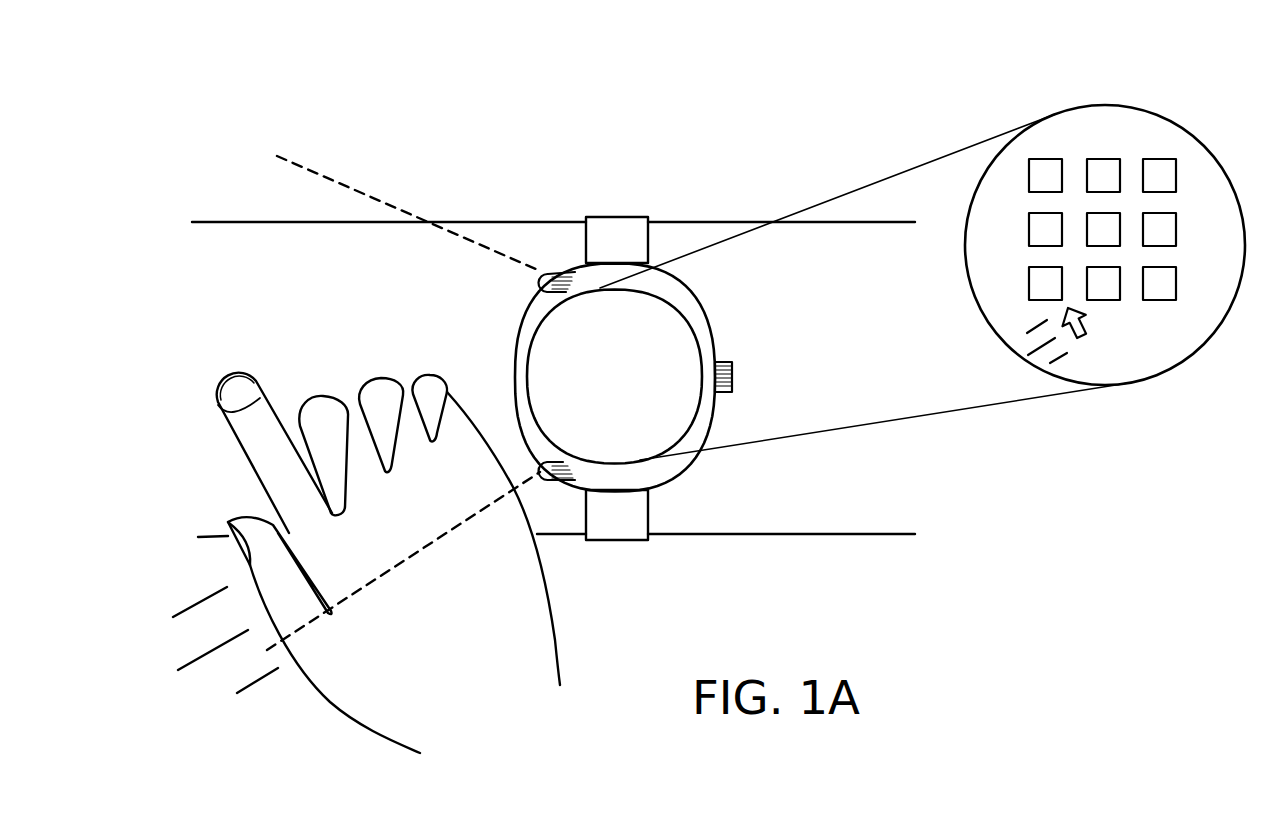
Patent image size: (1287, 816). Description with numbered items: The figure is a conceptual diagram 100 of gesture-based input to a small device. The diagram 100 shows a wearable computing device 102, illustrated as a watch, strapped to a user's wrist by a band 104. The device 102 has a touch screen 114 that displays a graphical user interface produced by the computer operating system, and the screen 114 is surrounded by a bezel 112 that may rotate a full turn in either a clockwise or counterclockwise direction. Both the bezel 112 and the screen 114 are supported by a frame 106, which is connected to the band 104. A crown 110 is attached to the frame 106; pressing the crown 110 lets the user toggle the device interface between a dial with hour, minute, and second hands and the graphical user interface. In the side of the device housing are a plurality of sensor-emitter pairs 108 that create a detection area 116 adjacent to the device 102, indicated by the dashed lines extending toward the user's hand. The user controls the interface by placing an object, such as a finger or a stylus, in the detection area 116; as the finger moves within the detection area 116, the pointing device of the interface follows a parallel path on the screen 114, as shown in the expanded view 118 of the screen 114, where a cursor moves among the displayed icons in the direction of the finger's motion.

The conceptual diagram 100 is at (782, 132).
The wearable computing device 102 is at (618, 187).
The band 104 is at (650, 245).
The frame 106 is at (647, 472).
The sensor-emitter pairs 108 is at (538, 283).
The crown 110 is at (743, 379).
The bezel 112 is at (515, 356).
The touch screen 114 is at (690, 334).
The detection area 116 is at (347, 277).
The expanded view 118 is at (1185, 127).